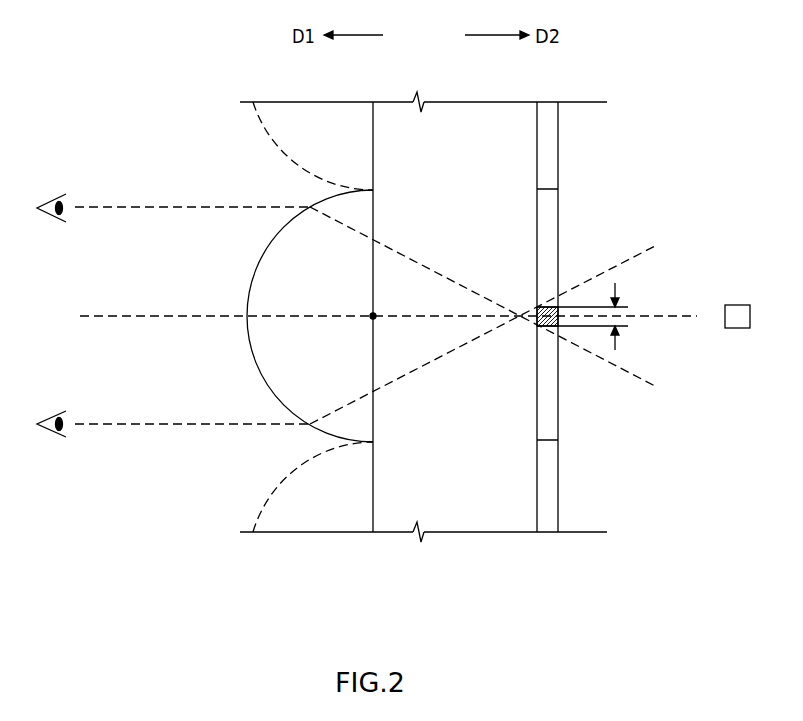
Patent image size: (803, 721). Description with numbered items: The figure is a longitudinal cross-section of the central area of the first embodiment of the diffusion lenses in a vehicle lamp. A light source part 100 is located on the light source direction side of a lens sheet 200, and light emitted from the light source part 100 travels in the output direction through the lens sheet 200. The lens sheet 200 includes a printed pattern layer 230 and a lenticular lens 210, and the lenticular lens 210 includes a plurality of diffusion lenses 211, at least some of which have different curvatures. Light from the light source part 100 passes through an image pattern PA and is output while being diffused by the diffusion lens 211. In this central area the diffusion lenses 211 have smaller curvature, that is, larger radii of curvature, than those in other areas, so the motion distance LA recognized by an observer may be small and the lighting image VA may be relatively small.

The light source part 100 is at (737, 305).
The lens sheet 200 is at (452, 317).
The lenticular lens 210 is at (495, 131).
The diffusion lens 211 is at (258, 258).
The printed pattern layer 230 is at (549, 168).
The image pattern PA is at (549, 229).
The lighting image VA is at (545, 327).
The motion distance LA is at (590, 310).